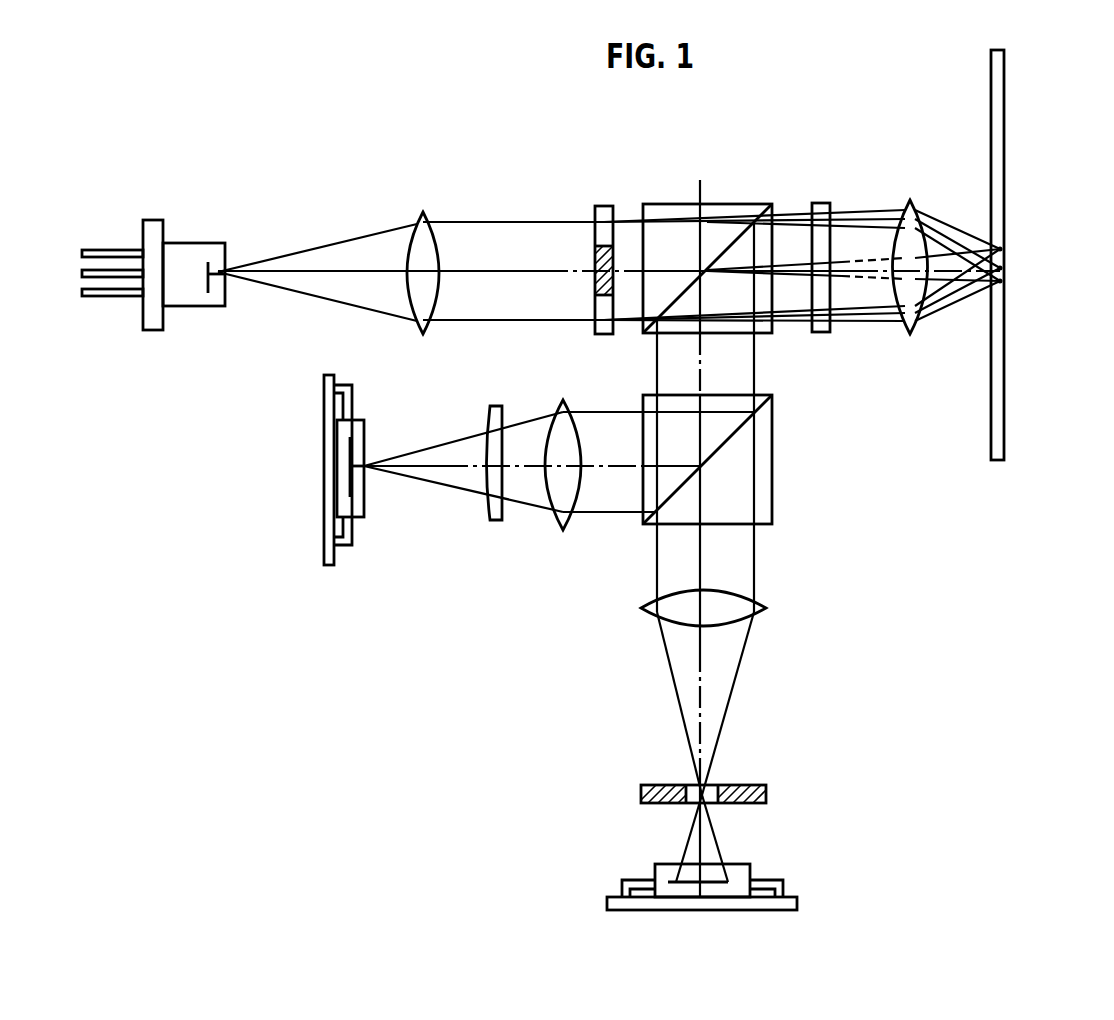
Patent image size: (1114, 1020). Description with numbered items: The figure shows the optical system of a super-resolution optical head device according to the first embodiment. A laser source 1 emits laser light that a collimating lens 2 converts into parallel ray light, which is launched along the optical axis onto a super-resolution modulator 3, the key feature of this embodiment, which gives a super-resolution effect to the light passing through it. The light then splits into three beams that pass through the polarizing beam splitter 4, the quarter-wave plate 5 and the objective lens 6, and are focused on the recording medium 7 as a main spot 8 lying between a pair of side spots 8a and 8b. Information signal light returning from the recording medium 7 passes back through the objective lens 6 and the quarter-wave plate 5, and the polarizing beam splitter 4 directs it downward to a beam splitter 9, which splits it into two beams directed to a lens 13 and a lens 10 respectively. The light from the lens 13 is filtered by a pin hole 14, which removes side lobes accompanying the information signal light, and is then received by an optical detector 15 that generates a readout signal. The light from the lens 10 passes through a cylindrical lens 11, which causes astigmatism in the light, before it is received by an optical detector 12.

The laser source 1 is at (200, 250).
The collimating lens 2 is at (421, 215).
The super-resolution modulator 3 is at (605, 205).
The polarizing beam splitter 4 is at (735, 205).
The quarter-wave plate 5 is at (820, 203).
The objective lens 6 is at (912, 200).
The recording medium 7 is at (1008, 172).
The main spot 8 is at (1006, 268).
The side spot 8a is at (1006, 250).
The side spot 8b is at (1006, 282).
The beam splitter 9 is at (774, 402).
The lens 10 is at (566, 404).
The cylindrical lens 11 is at (500, 408).
The optical detector 12 is at (366, 425).
The lens 13 is at (766, 604).
The pin hole 14 is at (766, 790).
The optical detector 15 is at (770, 880).